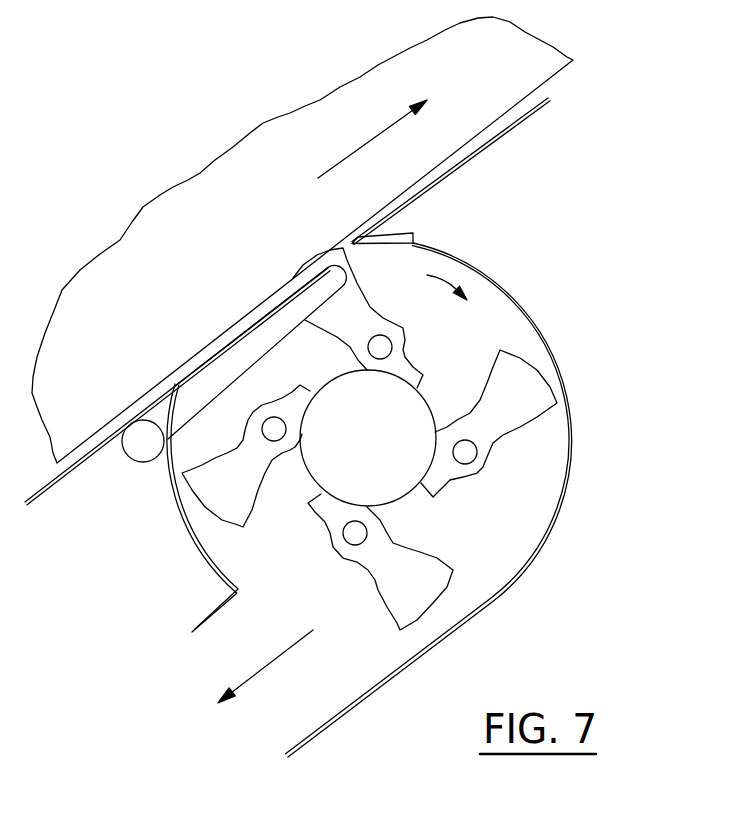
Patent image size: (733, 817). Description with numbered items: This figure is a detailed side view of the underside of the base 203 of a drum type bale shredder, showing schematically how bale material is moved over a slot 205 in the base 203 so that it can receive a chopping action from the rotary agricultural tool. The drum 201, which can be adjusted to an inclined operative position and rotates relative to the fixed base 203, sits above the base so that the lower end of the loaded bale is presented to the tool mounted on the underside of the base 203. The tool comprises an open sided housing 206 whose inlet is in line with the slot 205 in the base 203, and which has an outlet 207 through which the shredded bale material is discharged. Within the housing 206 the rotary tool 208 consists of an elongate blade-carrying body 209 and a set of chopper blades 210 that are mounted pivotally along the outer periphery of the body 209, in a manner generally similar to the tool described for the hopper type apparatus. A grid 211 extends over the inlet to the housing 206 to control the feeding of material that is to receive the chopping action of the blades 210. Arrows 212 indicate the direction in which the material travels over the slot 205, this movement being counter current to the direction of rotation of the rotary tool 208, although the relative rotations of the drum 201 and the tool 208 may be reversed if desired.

The drum 201 is at (285, 182).
The base 203 is at (476, 171).
The slot 205 is at (207, 356).
The housing 206 is at (542, 332).
The outlet 207 is at (232, 652).
The rotary tool 208 is at (444, 524).
The blade-carrying body 209 is at (424, 410).
The chopper blades 210 is at (547, 400).
The grid 211 is at (277, 332).
The arrows 212 is at (397, 125).